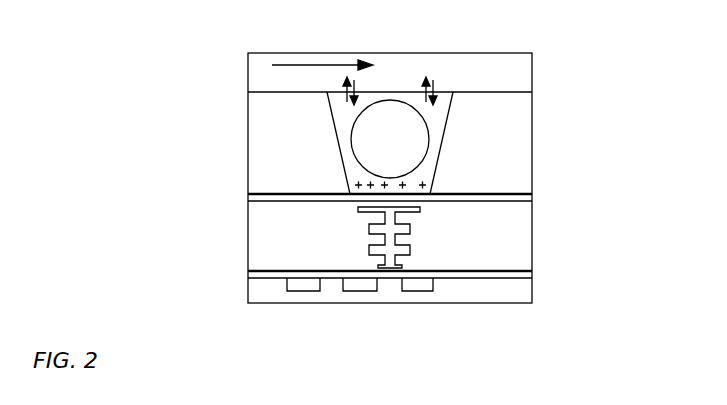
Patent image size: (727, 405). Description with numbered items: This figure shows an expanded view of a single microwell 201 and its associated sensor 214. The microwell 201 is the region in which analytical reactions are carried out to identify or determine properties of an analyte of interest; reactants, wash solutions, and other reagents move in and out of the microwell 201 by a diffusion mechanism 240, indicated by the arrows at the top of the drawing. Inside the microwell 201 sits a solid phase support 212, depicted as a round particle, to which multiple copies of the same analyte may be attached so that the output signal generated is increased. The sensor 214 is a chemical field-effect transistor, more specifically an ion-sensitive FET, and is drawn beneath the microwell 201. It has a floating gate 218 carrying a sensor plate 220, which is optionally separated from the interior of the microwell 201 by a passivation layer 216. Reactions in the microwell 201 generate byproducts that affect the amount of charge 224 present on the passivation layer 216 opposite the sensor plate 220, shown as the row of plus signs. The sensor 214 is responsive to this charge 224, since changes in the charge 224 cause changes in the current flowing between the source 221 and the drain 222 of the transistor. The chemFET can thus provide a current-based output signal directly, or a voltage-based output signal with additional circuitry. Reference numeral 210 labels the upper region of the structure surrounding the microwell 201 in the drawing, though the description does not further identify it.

The microwell 201 is at (342, 118).
The upper substrate / cladding region 210 is at (515, 162).
The solid phase support 212 is at (360, 147).
The sensor 214 is at (538, 193).
The passivation layer 216 is at (248, 197).
The floating gate 218 is at (355, 207).
The sensor plate 220 is at (418, 205).
The source 221 is at (422, 291).
The drain 222 is at (358, 291).
The charge 224 is at (355, 179).
The diffusion mechanism 240 is at (435, 87).